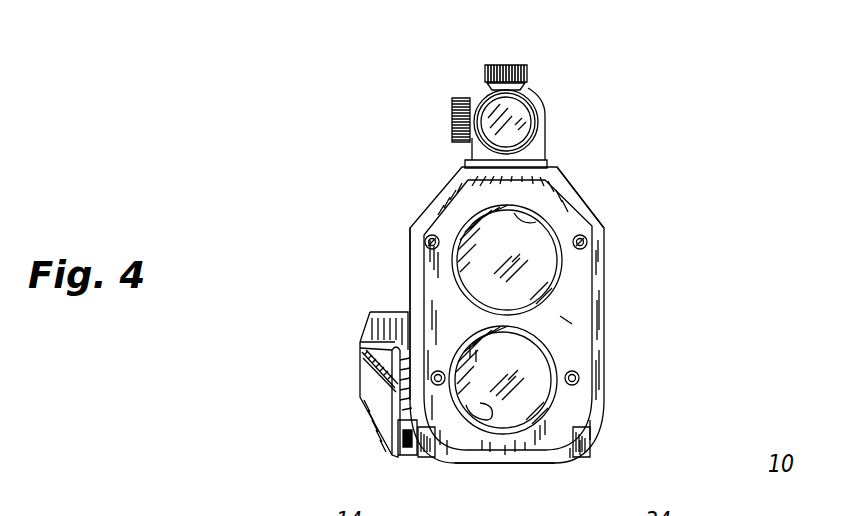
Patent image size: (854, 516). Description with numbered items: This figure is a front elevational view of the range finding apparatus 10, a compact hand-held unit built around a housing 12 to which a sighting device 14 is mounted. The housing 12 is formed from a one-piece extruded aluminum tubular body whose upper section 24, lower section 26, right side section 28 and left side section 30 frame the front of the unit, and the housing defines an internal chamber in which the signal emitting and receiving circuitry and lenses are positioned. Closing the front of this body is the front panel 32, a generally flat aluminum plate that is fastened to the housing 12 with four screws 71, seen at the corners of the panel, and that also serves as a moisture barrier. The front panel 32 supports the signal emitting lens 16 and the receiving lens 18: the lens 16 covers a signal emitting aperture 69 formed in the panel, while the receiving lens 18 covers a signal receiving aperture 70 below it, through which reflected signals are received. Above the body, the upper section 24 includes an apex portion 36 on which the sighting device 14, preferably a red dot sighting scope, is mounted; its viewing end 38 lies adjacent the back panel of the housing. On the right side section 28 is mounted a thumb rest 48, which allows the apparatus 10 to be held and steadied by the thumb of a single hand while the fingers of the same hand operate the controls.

The range finding apparatus 10 is at (646, 94).
The housing 12 is at (604, 262).
The sighting device 14 is at (528, 72).
The signal emitting lens 16 is at (512, 207).
The receiving lens 18 is at (520, 388).
The upper section 24 is at (464, 162).
The lower section 26 is at (503, 462).
The right side section 28 is at (408, 266).
The left side section 30 is at (605, 232).
The front panel 32 is at (567, 320).
The apex portion 36 is at (518, 122).
The viewing end 38 is at (482, 95).
The thumb rest 48 is at (390, 333).
The signal emitting aperture 69 is at (538, 222).
The signal receiving aperture 70 is at (490, 414).
The screws 71 is at (426, 237).